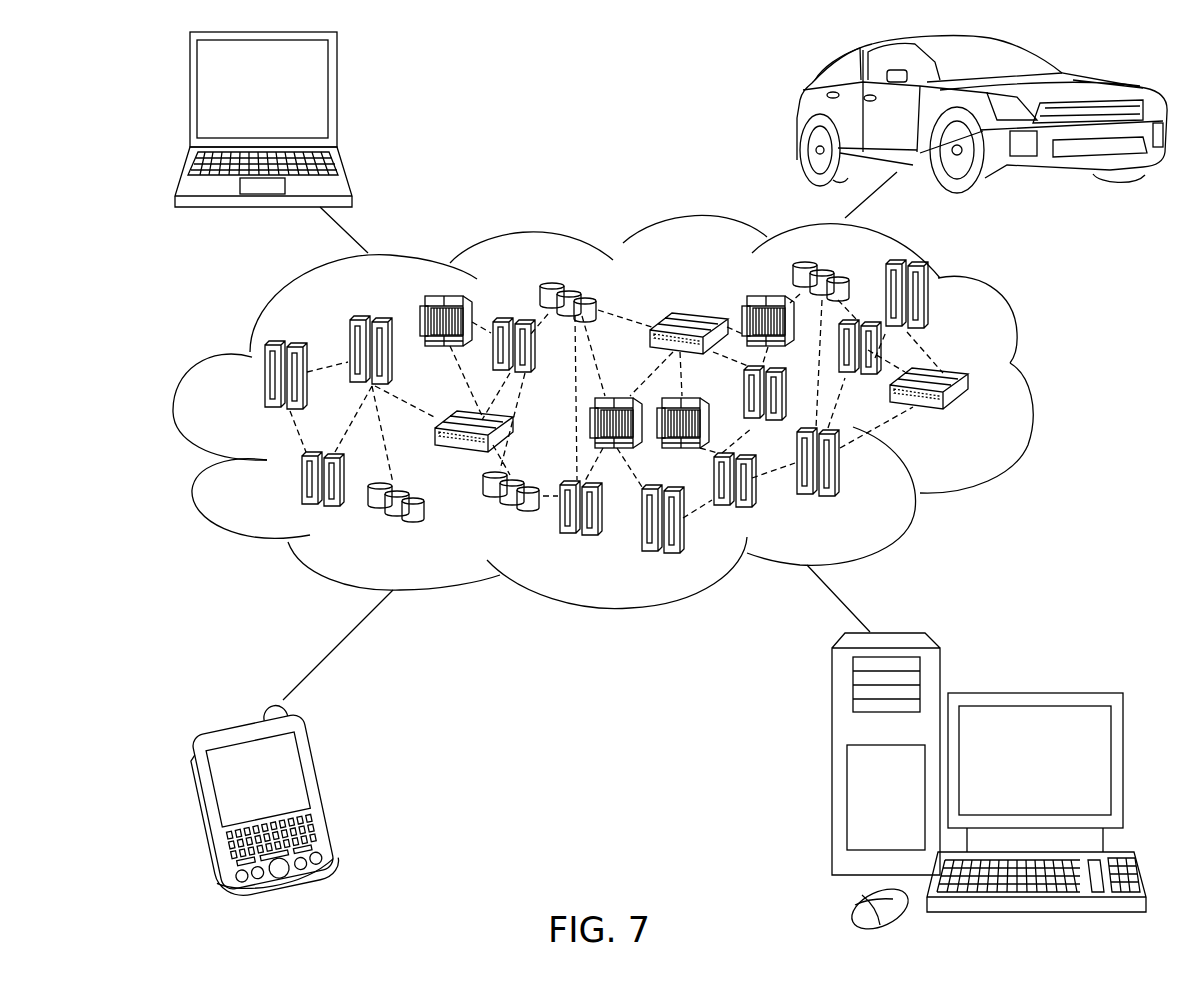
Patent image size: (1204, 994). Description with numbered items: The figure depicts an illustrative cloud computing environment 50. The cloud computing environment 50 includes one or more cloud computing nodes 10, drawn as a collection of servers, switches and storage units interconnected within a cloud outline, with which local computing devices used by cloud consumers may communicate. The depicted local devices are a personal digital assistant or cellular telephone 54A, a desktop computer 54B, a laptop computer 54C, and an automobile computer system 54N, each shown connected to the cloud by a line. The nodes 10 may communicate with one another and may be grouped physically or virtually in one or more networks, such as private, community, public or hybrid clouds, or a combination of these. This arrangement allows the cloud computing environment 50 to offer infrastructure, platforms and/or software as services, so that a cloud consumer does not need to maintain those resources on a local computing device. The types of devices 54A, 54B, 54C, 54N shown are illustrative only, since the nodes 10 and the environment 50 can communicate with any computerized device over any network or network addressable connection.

The personal digital assistant (PDA) or cellular telephone 54A is at (323, 790).
The desktop computer 54B is at (1030, 693).
The laptop computer 54C is at (335, 98).
The automobile computer system 54N is at (800, 112).
The cloud computing environment 50 is at (1032, 385).
The cloud computing nodes 10 is at (971, 421).